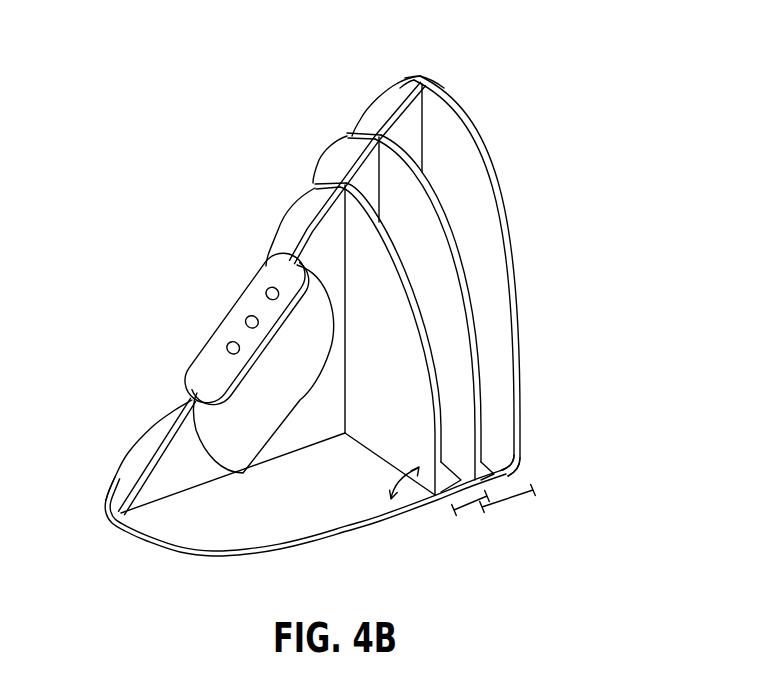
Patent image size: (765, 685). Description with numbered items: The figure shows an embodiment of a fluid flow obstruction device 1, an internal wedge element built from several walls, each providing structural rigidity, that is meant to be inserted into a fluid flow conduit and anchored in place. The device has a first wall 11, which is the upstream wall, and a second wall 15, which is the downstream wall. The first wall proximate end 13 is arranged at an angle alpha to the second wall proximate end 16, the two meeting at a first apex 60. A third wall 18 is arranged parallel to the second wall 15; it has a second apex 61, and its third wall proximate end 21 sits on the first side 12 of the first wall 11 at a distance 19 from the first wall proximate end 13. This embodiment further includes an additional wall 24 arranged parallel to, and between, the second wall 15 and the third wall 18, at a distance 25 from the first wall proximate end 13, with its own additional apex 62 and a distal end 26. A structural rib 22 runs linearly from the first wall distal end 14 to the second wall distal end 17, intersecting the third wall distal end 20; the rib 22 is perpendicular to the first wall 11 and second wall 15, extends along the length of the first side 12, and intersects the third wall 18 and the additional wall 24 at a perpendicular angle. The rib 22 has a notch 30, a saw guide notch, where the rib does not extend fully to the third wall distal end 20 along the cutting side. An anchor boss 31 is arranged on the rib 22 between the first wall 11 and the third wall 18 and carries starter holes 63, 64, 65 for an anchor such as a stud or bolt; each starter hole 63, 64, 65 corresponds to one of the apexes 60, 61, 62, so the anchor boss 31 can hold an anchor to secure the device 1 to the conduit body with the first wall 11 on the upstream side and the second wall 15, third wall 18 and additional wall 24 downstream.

The fluid flow obstruction device 1 is at (614, 99).
The first wall 11 is at (105, 481).
The first side 12 is at (252, 535).
The first wall proximate end 13 is at (507, 473).
The first wall distal end 14 is at (98, 535).
The second wall 15 is at (473, 133).
The second wall proximate end 16 is at (507, 466).
The second wall distal end 17 is at (418, 70).
The third wall 18 is at (283, 212).
The distance 19 is at (531, 506).
The third wall distal end 20 is at (325, 171).
The third wall proximate end 21 is at (379, 477).
The structural rib 22 is at (413, 128).
The additional wall 24 is at (470, 280).
The distance 25 is at (460, 516).
The distal end 26 is at (430, 176).
The notch 30 is at (410, 120).
The anchor boss 31 is at (249, 292).
The first apex 60 is at (492, 458).
The second apex 61 is at (386, 392).
The additional apex 62 is at (458, 392).
The starter hole 63 is at (270, 287).
The starter hole 64 is at (230, 346).
The starter hole 65 is at (245, 318).